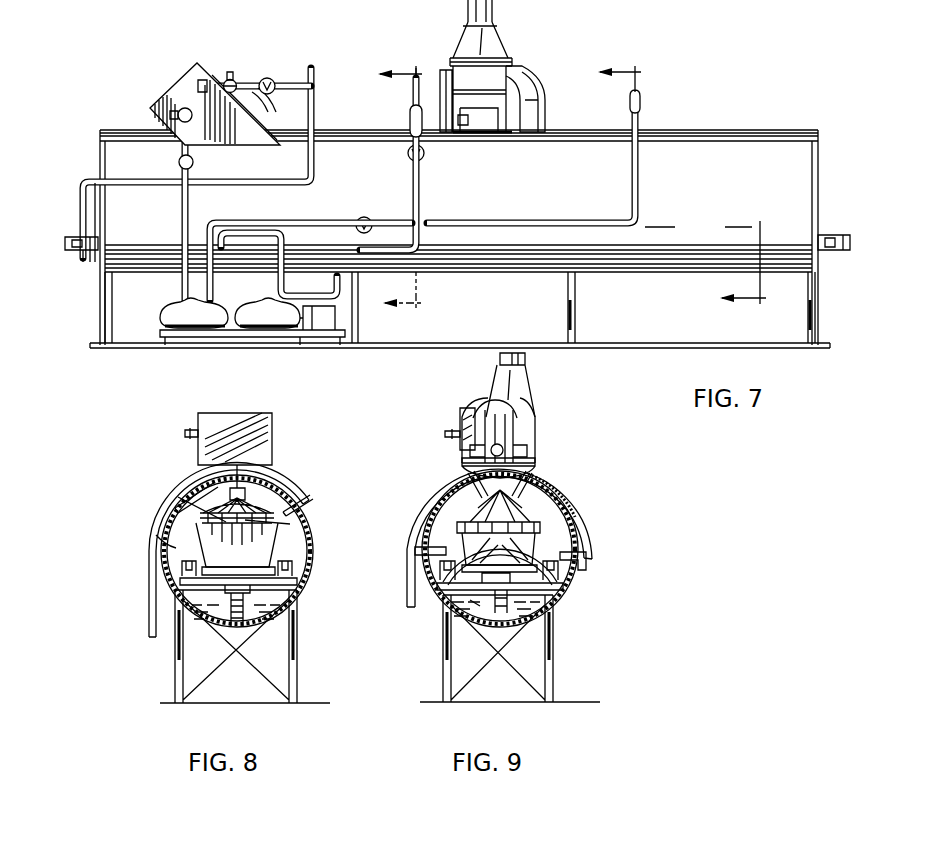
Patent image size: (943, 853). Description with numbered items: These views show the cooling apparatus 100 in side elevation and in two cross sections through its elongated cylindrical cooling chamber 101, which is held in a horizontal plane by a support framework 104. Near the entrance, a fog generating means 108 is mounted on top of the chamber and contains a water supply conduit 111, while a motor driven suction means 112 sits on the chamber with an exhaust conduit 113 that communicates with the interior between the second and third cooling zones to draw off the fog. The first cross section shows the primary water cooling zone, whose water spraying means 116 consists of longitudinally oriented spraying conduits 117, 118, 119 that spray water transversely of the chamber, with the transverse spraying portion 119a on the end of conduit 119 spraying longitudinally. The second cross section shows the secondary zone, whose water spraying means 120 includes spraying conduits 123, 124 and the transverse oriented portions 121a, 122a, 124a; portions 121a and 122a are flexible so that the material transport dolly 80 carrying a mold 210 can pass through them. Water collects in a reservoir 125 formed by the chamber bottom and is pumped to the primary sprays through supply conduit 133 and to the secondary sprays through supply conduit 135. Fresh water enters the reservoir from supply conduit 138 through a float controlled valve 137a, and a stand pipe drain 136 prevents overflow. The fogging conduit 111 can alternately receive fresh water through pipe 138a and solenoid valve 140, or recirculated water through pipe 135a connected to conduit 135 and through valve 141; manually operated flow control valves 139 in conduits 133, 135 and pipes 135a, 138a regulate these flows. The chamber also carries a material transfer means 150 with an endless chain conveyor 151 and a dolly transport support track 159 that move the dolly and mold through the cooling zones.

In FIG. 8, the material transport dolly 80 is at (197, 558).
In FIG. 7, the cooling apparatus 100 is at (750, 127).
In FIG. 8, the cooling apparatus 100 is at (316, 561).
In FIG. 7, the cooling chamber 101 is at (724, 191).
In FIG. 9, the cooling chamber 101 is at (565, 588).
In FIG. 7, the support framework 104 is at (660, 349).
In FIG. 8, the support framework 104 is at (297, 668).
In FIG. 9, the support framework 104 is at (558, 670).
In FIG. 7, the fog generating means 108 is at (158, 92).
In FIG. 8, the fog generating means 108 is at (277, 437).
In FIG. 9, the fog generating means 108 is at (470, 410).
In FIG. 7, the water supply conduit 111 is at (201, 78).
In FIG. 8, the water supply conduit 111 is at (190, 430).
In FIG. 9, the water supply conduit 111 is at (453, 431).
In FIG. 7, the motor driven suction means 112 is at (509, 62).
In FIG. 9, the motor driven suction means 112 is at (537, 397).
In FIG. 7, the exhaust conduit 113 is at (542, 120).
In FIG. 9, the exhaust conduit 113 is at (532, 462).
In FIG. 8, the water spraying means 116 is at (257, 494).
In FIG. 8, the spraying conduit 117 is at (156, 537).
In FIG. 8, the spraying conduit 118 is at (291, 528).
In FIG. 8, the spraying conduit 119 is at (200, 482).
In FIG. 8, the transverse spraying portion 119a is at (177, 497).
In FIG. 9, the water spraying means 120 is at (564, 490).
In FIG. 9, the transverse oriented portion 121a is at (418, 547).
In FIG. 9, the transverse oriented portion 122a is at (579, 554).
In FIG. 9, the spraying conduit 123 is at (446, 489).
In FIG. 9, the spraying conduit 124 is at (571, 508).
In FIG. 9, the transverse oriented portion 124a is at (548, 479).
In FIG. 9, the water reservoir 125 is at (483, 610).
In FIG. 7, the supply conduit 133 is at (423, 203).
In FIG. 8, the supply conduit 133 is at (306, 491).
In FIG. 7, the supply conduit 135 is at (543, 224).
In FIG. 9, the supply conduit 135 is at (406, 580).
In FIG. 7, the pipe 135a is at (188, 218).
In FIG. 7, the stand pipe drain 136 is at (239, 341).
In FIG. 7, the float controlled valve 137a is at (96, 262).
In FIG. 7, the supply conduit 138 is at (317, 86).
In FIG. 7, the pipe 138a is at (258, 96).
In FIG. 7, the flow control valve 139 is at (273, 81).
In FIG. 7, the solenoid valve 140 is at (233, 80).
In FIG. 9, the solenoid valve 140 is at (496, 607).
In FIG. 7, the valve 141 is at (191, 120).
In FIG. 7, the material transfer means 150 is at (862, 230).
In FIG. 8, the endless chain conveyor 151 is at (244, 598).
In FIG. 9, the dolly transport support track 159 is at (512, 588).
In FIG. 8, the mold 210 is at (257, 556).
In FIG. 9, the mold 210 is at (561, 525).